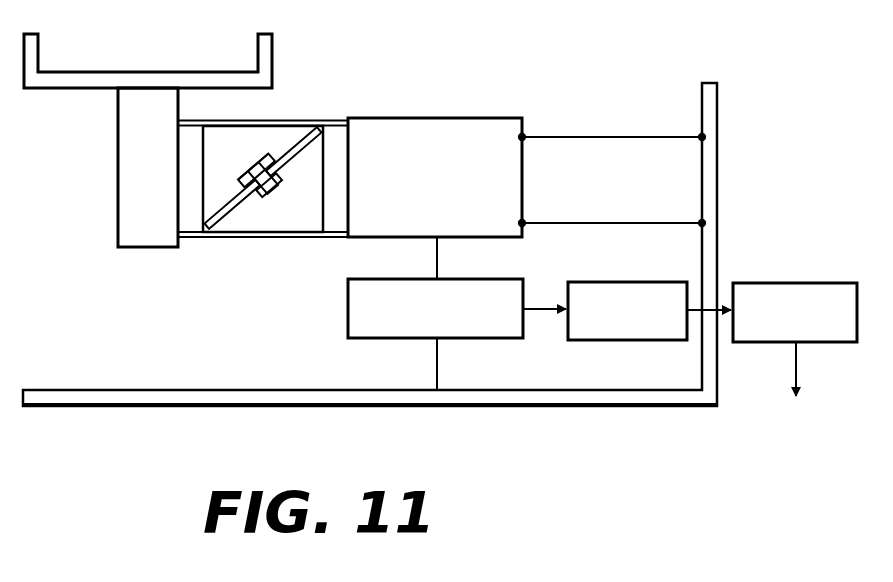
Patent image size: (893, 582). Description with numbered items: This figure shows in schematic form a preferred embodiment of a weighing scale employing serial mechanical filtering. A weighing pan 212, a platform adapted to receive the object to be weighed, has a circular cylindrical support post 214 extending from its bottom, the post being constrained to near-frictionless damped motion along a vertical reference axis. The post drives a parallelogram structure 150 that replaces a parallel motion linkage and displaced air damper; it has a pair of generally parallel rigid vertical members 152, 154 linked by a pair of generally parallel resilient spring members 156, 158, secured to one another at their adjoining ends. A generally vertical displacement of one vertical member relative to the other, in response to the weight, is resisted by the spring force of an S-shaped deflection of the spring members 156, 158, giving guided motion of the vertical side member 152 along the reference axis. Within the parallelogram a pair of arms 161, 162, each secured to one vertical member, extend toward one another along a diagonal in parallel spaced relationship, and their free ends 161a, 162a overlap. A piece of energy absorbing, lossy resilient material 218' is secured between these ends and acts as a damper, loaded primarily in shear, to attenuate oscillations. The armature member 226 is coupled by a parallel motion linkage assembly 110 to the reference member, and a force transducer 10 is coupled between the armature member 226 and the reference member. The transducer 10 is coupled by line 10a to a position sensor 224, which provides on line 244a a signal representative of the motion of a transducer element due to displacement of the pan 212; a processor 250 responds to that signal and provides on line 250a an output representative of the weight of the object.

The weighing pan 212 is at (111, 47).
The support post 214 is at (116, 167).
The vertical member 152 is at (193, 157).
The parallelogram structure 150 is at (287, 177).
The spring member 156 is at (236, 121).
The spring member 158 is at (236, 240).
The vertical member 154 is at (341, 152).
The arm 162 is at (304, 128).
The free end of arm 162a is at (264, 197).
The arm 161 is at (243, 183).
The free end of arm 161a is at (260, 164).
The energy absorbing resilient material 218' is at (295, 194).
The armature member 226 is at (525, 185).
The parallel motion linkage assembly 110 is at (601, 125).
The output line 244a is at (707, 300).
The force transducer 10 is at (455, 279).
The line 10a is at (533, 302).
The position sensor 224 is at (636, 282).
The processor 250 is at (818, 283).
The output line 250a is at (796, 360).